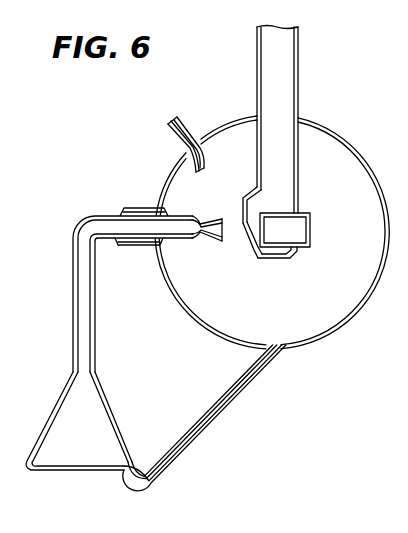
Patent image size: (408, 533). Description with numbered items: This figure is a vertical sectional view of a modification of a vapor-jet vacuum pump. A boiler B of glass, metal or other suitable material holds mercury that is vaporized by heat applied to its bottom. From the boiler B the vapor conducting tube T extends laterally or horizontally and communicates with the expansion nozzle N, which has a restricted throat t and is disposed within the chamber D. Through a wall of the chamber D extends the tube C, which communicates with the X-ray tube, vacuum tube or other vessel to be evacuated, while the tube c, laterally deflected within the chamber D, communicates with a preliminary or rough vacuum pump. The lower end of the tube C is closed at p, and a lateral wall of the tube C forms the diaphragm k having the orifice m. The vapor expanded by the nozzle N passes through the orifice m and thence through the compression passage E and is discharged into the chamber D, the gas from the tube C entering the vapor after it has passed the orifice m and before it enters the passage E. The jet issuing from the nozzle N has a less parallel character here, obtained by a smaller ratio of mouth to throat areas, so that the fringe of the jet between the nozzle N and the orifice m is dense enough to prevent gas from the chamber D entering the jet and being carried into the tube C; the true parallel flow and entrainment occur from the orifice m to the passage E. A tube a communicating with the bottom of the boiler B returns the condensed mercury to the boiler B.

The tube C is at (299, 45).
The chamber D is at (326, 126).
The tube c is at (183, 122).
The orifice m is at (243, 228).
The diaphragm k is at (253, 248).
The closed lower end p is at (272, 259).
The compression passage E is at (282, 244).
The vapor conducting tube T is at (138, 208).
The restricted throat t is at (184, 239).
The expansion nozzle N is at (209, 243).
The boiler B is at (118, 422).
The return tube a is at (221, 414).